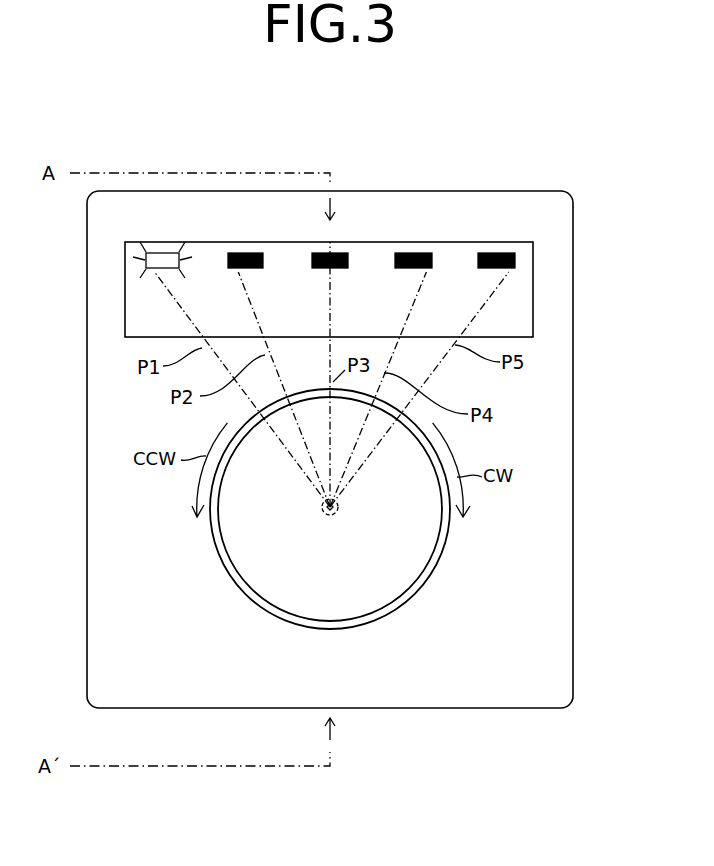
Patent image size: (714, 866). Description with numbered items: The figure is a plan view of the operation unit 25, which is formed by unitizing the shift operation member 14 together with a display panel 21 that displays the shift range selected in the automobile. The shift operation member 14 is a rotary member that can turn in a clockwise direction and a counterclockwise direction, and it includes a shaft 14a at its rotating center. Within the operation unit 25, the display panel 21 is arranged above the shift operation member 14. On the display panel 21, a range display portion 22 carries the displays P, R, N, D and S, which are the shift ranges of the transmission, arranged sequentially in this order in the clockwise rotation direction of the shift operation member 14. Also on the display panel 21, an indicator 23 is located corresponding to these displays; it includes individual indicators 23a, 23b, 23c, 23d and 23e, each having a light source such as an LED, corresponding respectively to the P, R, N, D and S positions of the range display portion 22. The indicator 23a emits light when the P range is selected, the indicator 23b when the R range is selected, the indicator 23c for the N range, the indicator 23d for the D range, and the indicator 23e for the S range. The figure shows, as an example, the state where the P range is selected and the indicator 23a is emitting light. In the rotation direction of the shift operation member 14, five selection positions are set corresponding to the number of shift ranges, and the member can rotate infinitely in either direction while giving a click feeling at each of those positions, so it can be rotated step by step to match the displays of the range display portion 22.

The shift operation member 14 is at (442, 547).
The shaft 14a is at (336, 513).
The display panel 21 is at (534, 305).
The range display portion 22 is at (531, 288).
The indicator 23 is at (345, 178).
The indicator 23a is at (163, 253).
The indicator 23b is at (245, 253).
The indicator 23c is at (334, 253).
The indicator 23d is at (415, 253).
The indicator 23e is at (512, 195).
The operation unit 25 is at (574, 197).